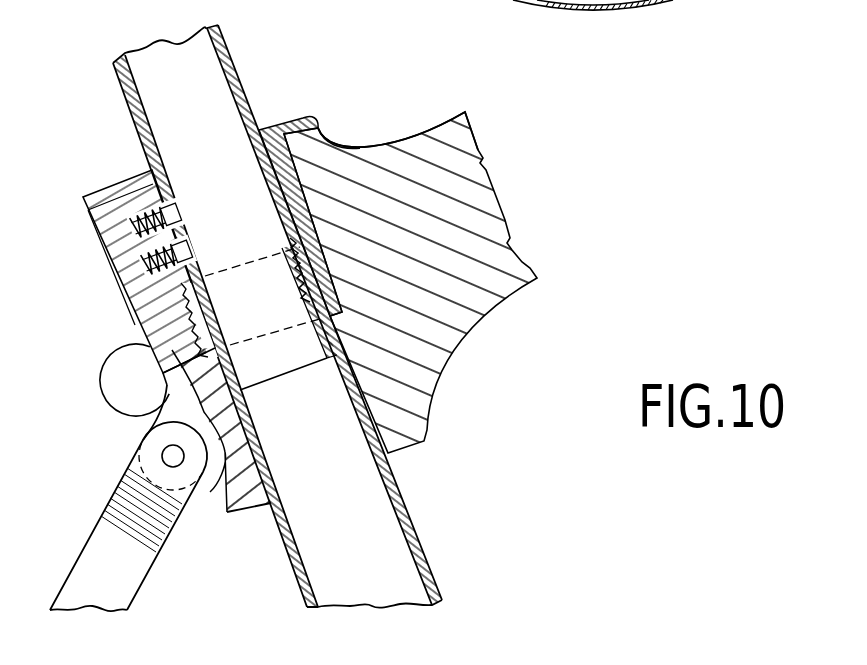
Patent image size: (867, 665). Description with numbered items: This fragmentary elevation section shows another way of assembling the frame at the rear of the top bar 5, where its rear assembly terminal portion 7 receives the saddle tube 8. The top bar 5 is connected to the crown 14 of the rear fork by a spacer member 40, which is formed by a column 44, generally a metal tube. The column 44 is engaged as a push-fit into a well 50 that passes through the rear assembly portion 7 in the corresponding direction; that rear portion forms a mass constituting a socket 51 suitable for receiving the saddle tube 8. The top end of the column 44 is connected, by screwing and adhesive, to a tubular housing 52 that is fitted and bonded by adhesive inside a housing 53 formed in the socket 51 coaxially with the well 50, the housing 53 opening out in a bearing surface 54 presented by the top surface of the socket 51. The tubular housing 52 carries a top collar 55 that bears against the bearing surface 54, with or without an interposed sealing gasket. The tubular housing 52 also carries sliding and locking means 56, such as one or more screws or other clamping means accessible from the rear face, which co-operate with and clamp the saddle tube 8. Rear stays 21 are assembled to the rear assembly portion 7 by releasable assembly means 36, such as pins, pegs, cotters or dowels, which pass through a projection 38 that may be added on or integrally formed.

The top bar 5 is at (507, 198).
The rear assembly terminal portion 7 is at (415, 130).
The saddle tube 8 is at (230, 56).
The crown 14 is at (609, 10).
The rear stays 21 is at (88, 570).
The releasable assembly means 36 is at (162, 455).
The projection 38 is at (213, 480).
The spacer member 40 is at (436, 566).
The column 44 is at (300, 573).
The well 50 is at (355, 399).
The socket 51 is at (168, 398).
The tubular housing 52 is at (197, 340).
The housing 53 is at (178, 319).
The bearing surface 54 is at (332, 142).
The top collar 55 is at (287, 124).
The sliding and locking means 56 is at (136, 277).